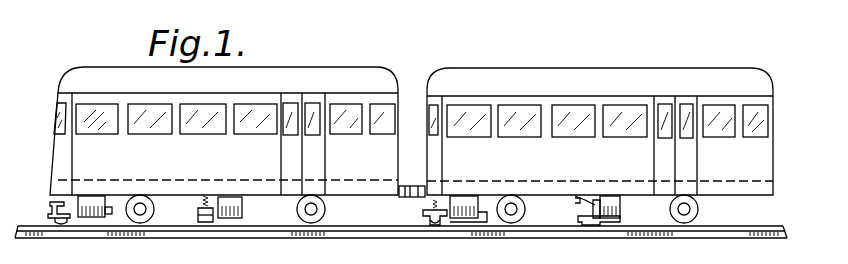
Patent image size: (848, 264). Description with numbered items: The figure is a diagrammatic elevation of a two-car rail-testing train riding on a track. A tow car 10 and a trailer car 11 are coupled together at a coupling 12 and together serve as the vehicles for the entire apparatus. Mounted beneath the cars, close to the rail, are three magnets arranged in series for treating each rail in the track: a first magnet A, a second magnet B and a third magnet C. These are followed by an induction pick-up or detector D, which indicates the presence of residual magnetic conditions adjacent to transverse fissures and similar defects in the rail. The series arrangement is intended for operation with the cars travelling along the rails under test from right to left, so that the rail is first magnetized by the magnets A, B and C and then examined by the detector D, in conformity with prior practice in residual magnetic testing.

The tow car 10 is at (283, 82).
The trailer car 11 is at (568, 82).
The coupling 12 is at (411, 185).
The first magnet A is at (45, 214).
The second magnet B is at (197, 211).
The third magnet C is at (421, 216).
The pick-up or detector D is at (575, 214).